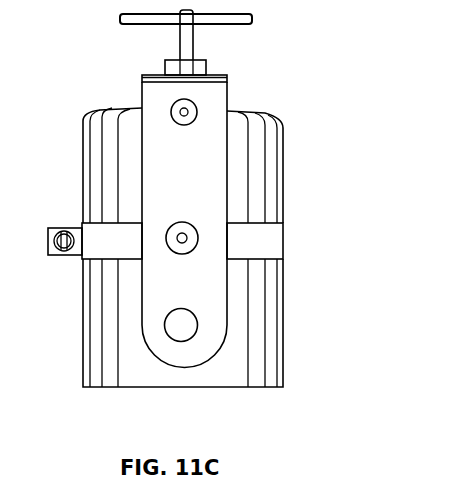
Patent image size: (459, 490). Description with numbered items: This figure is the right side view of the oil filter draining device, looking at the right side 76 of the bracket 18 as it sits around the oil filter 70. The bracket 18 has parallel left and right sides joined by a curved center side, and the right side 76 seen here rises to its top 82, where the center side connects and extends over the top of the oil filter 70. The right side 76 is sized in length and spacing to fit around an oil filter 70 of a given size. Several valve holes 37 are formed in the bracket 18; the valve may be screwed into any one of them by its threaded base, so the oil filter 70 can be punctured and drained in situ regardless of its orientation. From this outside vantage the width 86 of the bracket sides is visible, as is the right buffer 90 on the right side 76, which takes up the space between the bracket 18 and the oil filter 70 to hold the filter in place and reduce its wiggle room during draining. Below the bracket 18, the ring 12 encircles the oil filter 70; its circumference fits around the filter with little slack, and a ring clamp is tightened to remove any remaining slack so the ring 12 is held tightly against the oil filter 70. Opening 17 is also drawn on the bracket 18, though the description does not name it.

The ring 12 is at (270, 243).
The opening 17 is at (180, 240).
The bracket 18 is at (165, 300).
The valve hole 37 is at (164, 325).
The oil filter 70 is at (92, 188).
The right side 76 is at (147, 131).
The top 82 is at (229, 80).
The width 86 is at (227, 179).
The right buffer 90 is at (173, 117).